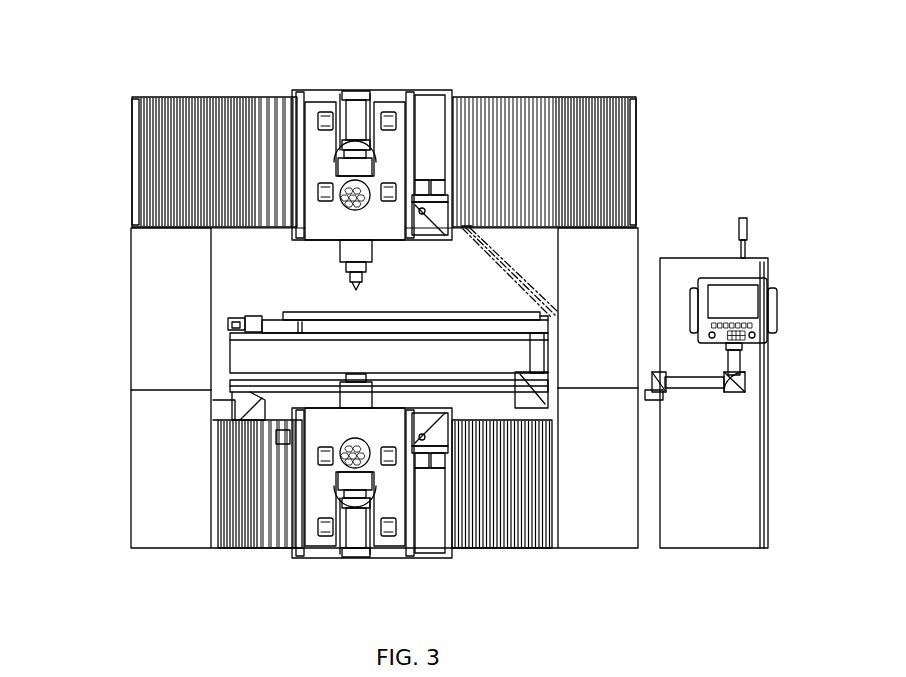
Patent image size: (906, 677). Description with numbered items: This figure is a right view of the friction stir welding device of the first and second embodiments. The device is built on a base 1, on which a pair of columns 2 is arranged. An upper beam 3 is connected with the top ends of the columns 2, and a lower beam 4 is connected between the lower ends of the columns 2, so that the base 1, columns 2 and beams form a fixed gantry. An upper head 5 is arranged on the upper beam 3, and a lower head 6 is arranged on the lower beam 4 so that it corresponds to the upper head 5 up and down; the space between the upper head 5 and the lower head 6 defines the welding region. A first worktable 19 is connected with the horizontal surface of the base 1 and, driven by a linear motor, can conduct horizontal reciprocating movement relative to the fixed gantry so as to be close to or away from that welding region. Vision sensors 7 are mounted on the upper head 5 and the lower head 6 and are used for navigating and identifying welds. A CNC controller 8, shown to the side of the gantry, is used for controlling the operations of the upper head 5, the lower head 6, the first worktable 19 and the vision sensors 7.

The base 1 is at (172, 480).
The column 2 is at (178, 315).
The upper beam 3 is at (182, 150).
The lower beam 4 is at (502, 502).
The upper head 5 is at (368, 90).
The lower head 6 is at (425, 548).
The vision sensor 7 is at (353, 193).
The CNC controller 8 is at (732, 305).
The first worktable 19 is at (230, 358).